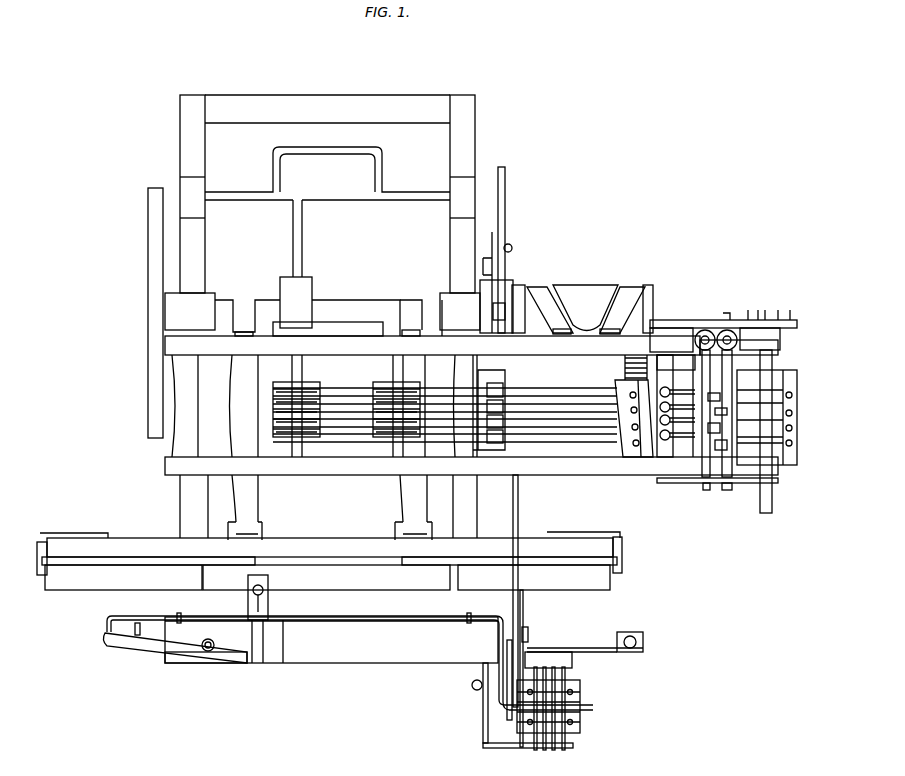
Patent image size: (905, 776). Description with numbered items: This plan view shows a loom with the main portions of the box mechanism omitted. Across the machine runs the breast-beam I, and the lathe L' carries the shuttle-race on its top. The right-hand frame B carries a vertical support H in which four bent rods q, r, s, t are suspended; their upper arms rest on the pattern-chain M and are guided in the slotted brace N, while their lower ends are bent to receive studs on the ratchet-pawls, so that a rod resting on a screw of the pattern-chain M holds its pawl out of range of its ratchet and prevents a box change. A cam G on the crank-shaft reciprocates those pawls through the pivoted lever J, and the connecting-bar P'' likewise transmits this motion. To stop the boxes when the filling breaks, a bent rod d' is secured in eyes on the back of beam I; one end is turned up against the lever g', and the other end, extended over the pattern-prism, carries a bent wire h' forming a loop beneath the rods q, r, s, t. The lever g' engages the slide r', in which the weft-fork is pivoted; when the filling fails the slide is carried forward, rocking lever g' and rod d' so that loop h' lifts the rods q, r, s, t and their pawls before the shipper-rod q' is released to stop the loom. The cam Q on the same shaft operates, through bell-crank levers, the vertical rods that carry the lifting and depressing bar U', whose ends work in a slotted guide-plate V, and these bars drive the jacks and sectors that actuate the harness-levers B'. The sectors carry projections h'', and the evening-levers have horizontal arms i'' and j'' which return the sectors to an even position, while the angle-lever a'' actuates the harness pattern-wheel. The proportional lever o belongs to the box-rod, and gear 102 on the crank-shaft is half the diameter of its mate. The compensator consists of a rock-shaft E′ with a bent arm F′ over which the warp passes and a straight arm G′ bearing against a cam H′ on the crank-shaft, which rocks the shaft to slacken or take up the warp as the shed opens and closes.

The rock-shaft E′ is at (327, 182).
The bent arm F′ is at (352, 150).
The straight arm G′ is at (306, 238).
The cam H′ is at (296, 302).
The breast-beam I is at (331, 481).
The cam G is at (496, 250).
The cam Q is at (585, 308).
The harness-levers B′ is at (506, 385).
The horizontal arm j'' is at (633, 406).
The horizontal arm i'' is at (641, 389).
The projections h'' is at (644, 424).
The angle-lever a'' is at (716, 318).
The depressing bar U' is at (713, 425).
The pattern-chain M is at (788, 470).
The slotted guide-plate V is at (724, 485).
The proportional lever o is at (735, 478).
The gear 102 is at (160, 443).
The connecting-bar P'' is at (524, 591).
The lathe L' is at (329, 561).
The bent rod d' is at (353, 652).
The shipper-rod q' is at (143, 614).
The lever g' is at (165, 646).
The slide r' is at (257, 675).
The right-hand frame B is at (591, 668).
The slotted brace N is at (516, 705).
The pivoted lever J is at (503, 742).
The bent wire h' is at (588, 725).
The vertical support H is at (550, 658).
The bent rod q is at (535, 717).
The bent rod r is at (544, 717).
The bent rod s is at (553, 717).
The bent rod t is at (564, 717).